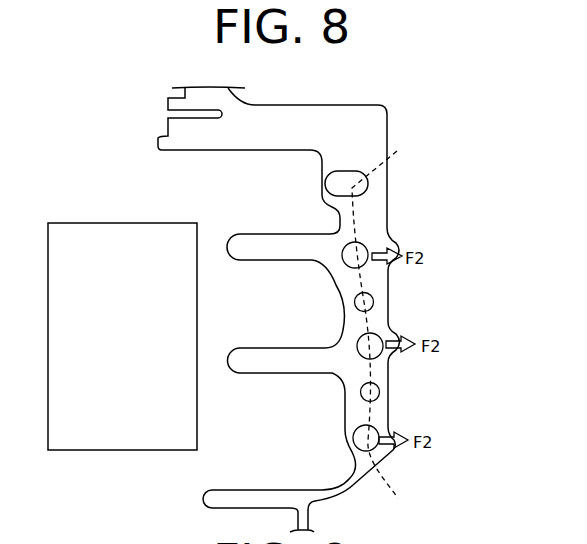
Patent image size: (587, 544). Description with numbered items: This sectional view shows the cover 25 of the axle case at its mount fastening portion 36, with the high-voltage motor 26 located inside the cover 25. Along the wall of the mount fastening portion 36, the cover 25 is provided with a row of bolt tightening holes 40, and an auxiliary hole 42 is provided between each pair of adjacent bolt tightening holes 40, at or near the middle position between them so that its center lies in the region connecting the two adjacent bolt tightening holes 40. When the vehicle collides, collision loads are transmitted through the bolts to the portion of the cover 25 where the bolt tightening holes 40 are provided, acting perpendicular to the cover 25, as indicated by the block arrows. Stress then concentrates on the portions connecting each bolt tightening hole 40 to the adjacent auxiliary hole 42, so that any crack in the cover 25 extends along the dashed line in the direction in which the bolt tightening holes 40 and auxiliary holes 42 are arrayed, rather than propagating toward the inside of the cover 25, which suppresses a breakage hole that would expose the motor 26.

The cover 25 is at (290, 97).
The motor 26 is at (97, 238).
The mount fastening portion 36 is at (400, 212).
The bolt tightening holes 40 is at (348, 262).
The auxiliary holes 42 is at (356, 302).